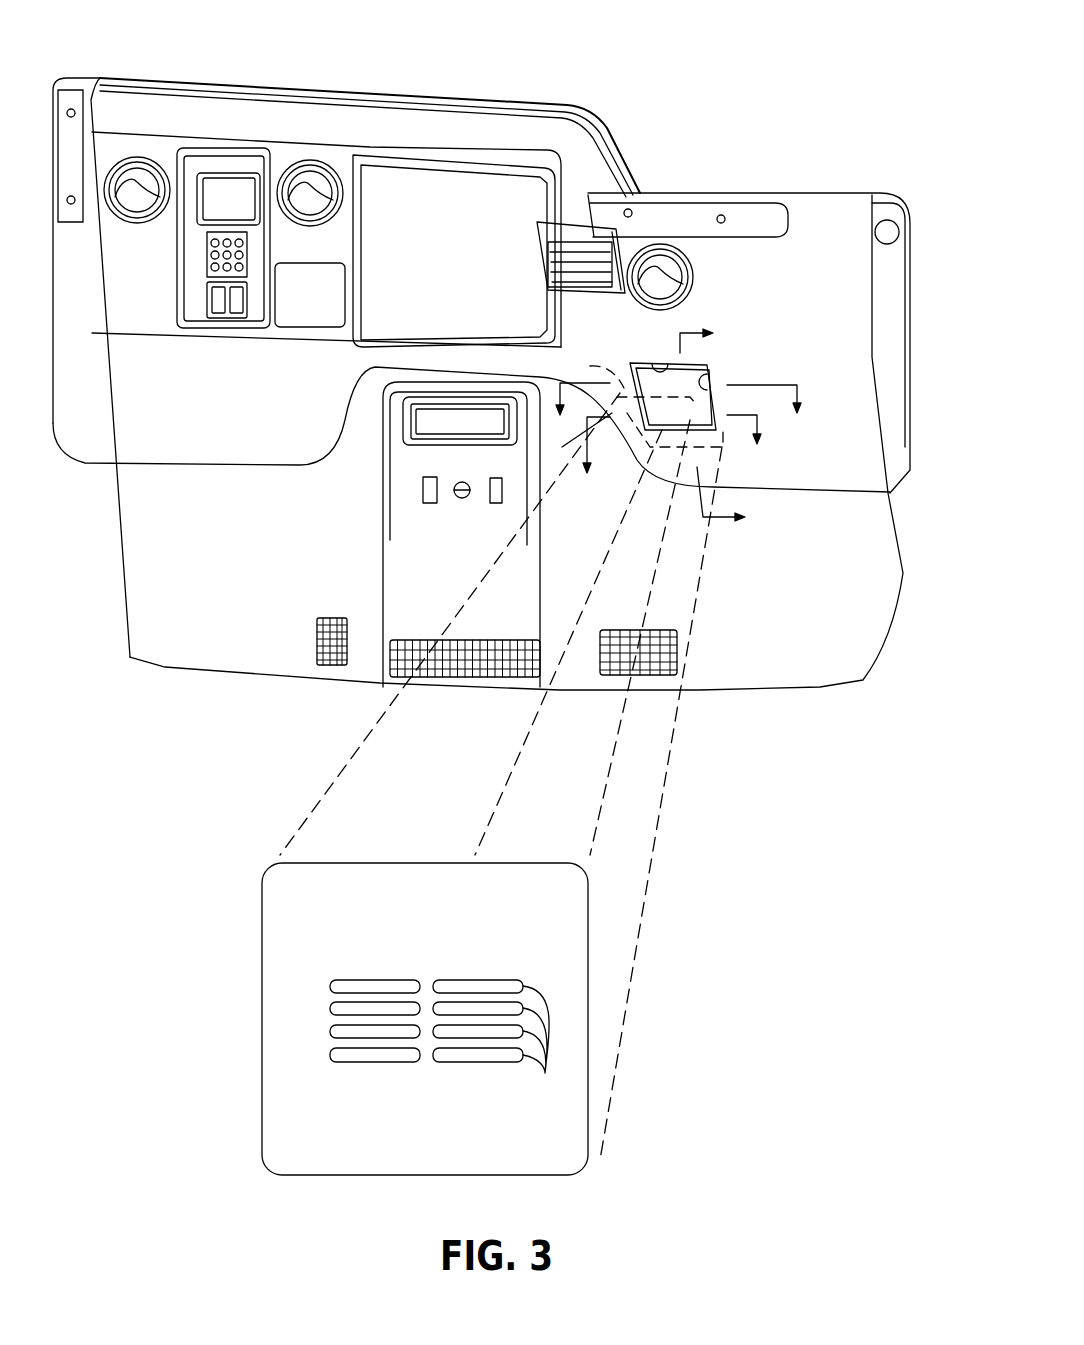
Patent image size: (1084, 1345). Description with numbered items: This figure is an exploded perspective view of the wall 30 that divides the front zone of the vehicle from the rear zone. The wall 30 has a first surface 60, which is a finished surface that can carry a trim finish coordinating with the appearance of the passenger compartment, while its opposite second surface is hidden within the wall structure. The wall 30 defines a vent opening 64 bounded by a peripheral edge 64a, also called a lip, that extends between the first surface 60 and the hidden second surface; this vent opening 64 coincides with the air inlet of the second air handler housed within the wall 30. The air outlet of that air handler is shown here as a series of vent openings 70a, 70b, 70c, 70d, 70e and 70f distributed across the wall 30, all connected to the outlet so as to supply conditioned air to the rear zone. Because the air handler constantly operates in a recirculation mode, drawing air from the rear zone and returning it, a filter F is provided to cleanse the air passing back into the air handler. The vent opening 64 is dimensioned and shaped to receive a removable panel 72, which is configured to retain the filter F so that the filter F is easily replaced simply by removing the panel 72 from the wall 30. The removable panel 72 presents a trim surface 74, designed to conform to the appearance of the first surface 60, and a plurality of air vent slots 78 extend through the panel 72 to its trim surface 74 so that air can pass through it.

The wall 30 is at (322, 52).
The first surface 60 is at (835, 383).
The vent opening 64 is at (700, 364).
The peripheral edge 64a is at (632, 363).
The vent opening 70a is at (137, 200).
The vent opening 70b is at (318, 208).
The vent opening 70c is at (665, 283).
The vent opening 70d is at (317, 640).
The vent opening 70e is at (490, 663).
The vent opening 70f is at (642, 660).
The removable panel 72 is at (254, 911).
The trim surface 74 is at (630, 380).
The air vent slots 78 is at (541, 1047).
The filter F is at (545, 255).